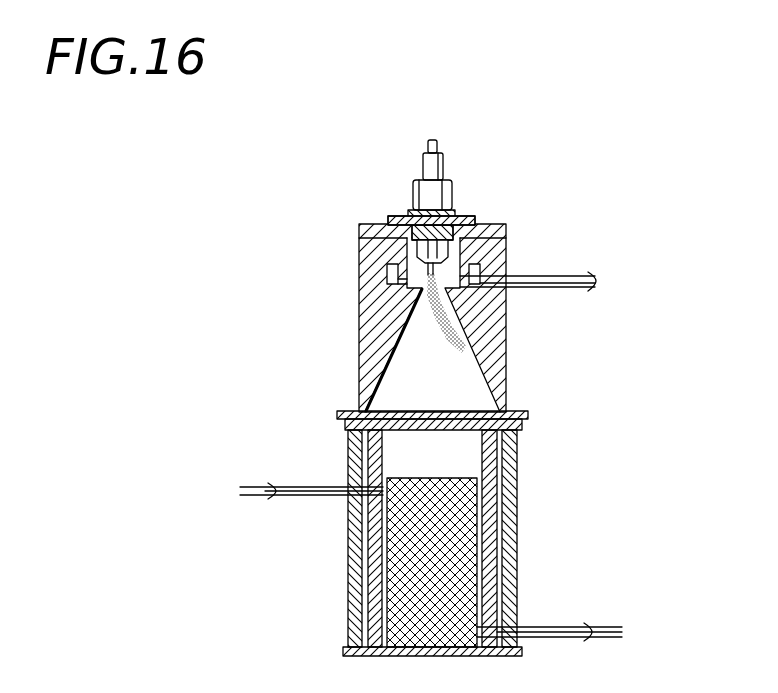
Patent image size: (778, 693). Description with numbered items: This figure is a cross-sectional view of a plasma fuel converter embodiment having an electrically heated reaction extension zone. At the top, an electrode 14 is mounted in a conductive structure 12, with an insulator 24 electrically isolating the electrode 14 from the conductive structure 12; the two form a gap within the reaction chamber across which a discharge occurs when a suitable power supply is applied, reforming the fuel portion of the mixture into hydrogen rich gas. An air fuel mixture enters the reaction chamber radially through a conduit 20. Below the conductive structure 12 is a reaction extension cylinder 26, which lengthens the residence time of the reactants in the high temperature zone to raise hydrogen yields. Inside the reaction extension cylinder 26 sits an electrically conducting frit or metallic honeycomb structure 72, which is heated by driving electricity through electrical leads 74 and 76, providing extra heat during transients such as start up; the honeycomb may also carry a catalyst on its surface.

The conductive structure 12 is at (372, 312).
The electrode 14 is at (430, 140).
The conduit 20 is at (548, 274).
The insulator 24 is at (455, 194).
The reaction extension cylinder 26 is at (353, 602).
The electrically conducting frit or honeycomb structure 72 is at (437, 478).
The electrical lead 74 is at (258, 486).
The electrical lead 76 is at (610, 627).